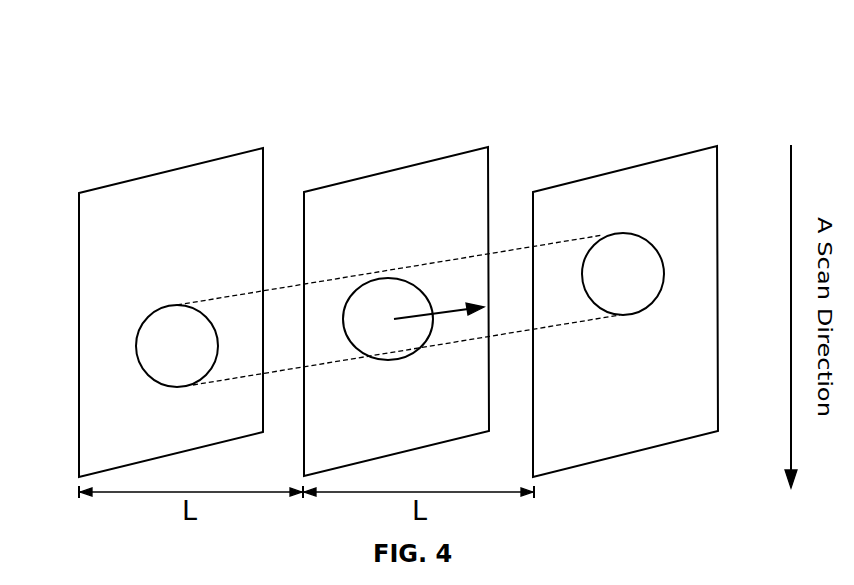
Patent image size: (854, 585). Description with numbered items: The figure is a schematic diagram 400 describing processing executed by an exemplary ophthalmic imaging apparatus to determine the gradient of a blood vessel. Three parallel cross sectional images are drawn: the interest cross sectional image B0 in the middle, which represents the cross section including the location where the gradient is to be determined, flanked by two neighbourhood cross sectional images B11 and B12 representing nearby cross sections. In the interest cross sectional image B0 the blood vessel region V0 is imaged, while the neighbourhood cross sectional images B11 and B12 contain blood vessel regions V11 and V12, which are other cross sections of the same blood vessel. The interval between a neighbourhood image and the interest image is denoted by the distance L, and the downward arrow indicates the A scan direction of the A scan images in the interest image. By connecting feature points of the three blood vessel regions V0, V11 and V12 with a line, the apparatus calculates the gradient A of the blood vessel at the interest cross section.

The schematic diagram 400 is at (186, 44).
The neighbourhood cross sectional image B11 is at (166, 171).
The interest cross sectional image B0 is at (398, 169).
The neighbourhood cross sectional image B12 is at (627, 169).
The blood vessel region V11 is at (138, 360).
The blood vessel region V0 is at (349, 343).
The blood vessel region V12 is at (594, 308).
The gradient A is at (460, 304).